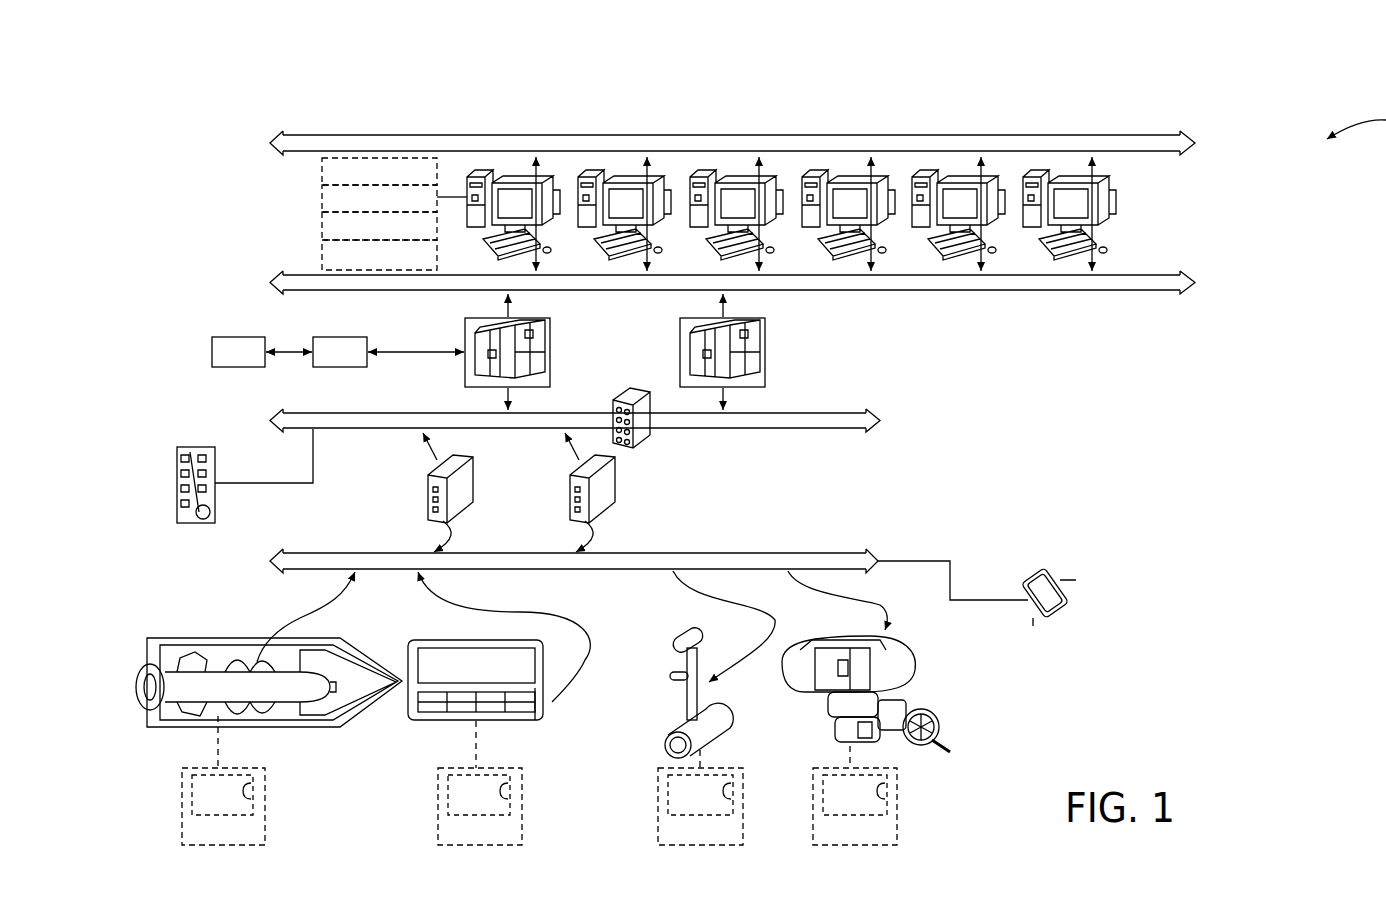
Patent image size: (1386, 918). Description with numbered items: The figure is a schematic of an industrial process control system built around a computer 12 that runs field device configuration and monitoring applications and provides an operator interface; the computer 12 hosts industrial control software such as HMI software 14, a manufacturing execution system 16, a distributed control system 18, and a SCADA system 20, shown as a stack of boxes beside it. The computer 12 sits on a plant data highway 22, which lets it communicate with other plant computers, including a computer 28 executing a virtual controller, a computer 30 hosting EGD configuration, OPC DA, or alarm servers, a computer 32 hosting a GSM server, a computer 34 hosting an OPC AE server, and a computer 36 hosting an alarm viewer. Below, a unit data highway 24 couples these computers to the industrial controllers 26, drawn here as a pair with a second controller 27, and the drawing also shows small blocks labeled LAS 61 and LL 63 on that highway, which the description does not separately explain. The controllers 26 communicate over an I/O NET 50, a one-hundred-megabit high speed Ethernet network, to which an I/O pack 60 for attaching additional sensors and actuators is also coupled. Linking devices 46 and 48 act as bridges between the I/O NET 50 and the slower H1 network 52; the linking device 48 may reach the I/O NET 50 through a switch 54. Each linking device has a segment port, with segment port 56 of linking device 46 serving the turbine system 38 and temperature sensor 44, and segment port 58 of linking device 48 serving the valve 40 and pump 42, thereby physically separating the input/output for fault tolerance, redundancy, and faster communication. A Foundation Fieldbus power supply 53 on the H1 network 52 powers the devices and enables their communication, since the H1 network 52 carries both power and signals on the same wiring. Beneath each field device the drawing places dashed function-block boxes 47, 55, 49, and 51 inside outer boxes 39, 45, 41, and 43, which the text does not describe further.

The computer 12 is at (486, 177).
The human-machine interface (HMI) software 14 is at (322, 172).
The manufacturing execution system (MES) 16 is at (322, 200).
The distributed control system (DCS) 18 is at (322, 229).
The supervisor control and data acquisition (SCADA) system 20 is at (322, 257).
The plant data highway 22 is at (1192, 137).
The unit data highway 24 is at (1192, 276).
The industrial controller 26 is at (758, 352).
The server 27 is at (551, 350).
The computer 28 is at (622, 186).
The computer 30 is at (734, 186).
The computer 32 is at (846, 186).
The computer 34 is at (956, 186).
The computer 36 is at (1067, 186).
The turbine system 38 is at (297, 738).
The function block container 39 is at (248, 831).
The valve 40 is at (706, 745).
The function block container 41 is at (725, 831).
The pump 42 is at (937, 736).
The function block container 43 is at (879, 831).
The temperature sensor 44 is at (505, 721).
The function block container 45 is at (504, 831).
The linking device 46 is at (468, 483).
The function block FB1 47 is at (253, 793).
The linking device 48 is at (616, 478).
The function block FB3 49 is at (732, 795).
The I/O NET 50 is at (880, 428).
The function block FB4 51 is at (886, 795).
The H1 network 52 is at (875, 553).
The Foundation Fieldbus power supply 53 is at (1043, 573).
The switch 54 is at (645, 445).
The function block FB2 55 is at (510, 793).
The segment port 56 is at (420, 524).
The segment port 58 is at (563, 524).
The I/O pack 60 is at (195, 448).
The link active scheduler 61 is at (340, 368).
The link master 63 is at (212, 350).